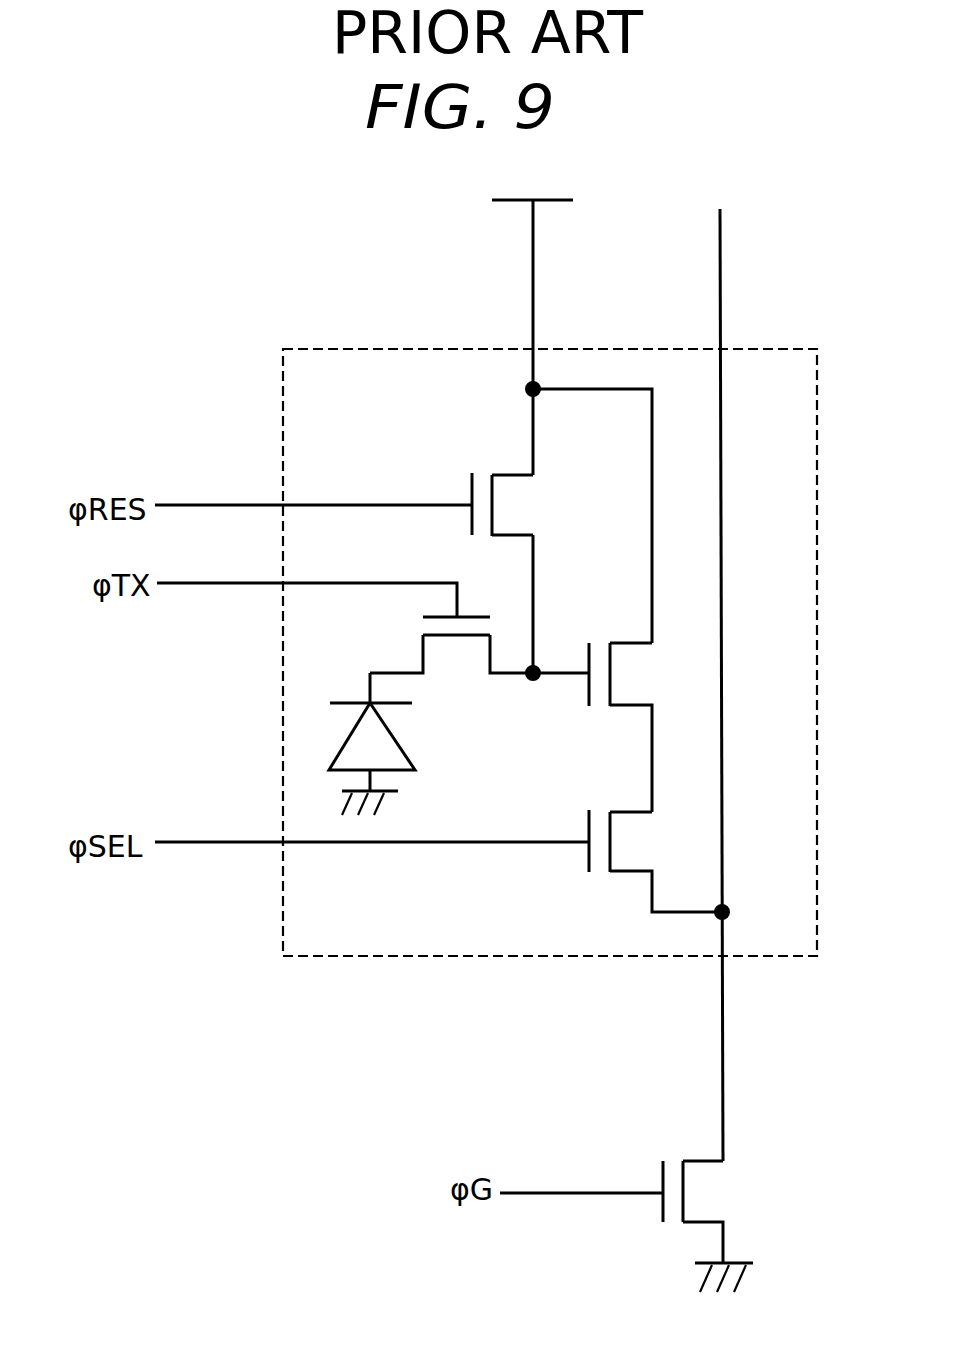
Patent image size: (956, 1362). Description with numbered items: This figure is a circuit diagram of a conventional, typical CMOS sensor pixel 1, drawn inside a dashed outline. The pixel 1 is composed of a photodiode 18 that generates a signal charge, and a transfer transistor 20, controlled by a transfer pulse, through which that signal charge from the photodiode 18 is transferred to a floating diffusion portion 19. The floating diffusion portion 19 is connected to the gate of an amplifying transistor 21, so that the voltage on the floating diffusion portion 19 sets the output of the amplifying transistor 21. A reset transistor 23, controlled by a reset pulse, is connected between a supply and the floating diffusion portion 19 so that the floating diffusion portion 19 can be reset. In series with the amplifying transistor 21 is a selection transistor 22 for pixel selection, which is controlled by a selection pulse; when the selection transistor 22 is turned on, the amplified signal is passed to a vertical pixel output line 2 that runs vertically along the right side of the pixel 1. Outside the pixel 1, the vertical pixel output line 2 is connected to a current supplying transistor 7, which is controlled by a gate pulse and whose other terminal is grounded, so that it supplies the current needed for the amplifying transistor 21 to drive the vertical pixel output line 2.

The pixel 1 is at (765, 349).
The vertical pixel output line 2 is at (725, 1035).
The current supplying transistor 7 is at (660, 1173).
The photodiode 18 is at (400, 745).
The floating diffusion portion 19 is at (535, 583).
The transfer transistor 20 is at (423, 640).
The amplifying transistor 21 is at (586, 690).
The selection transistor 22 is at (586, 854).
The reset transistor 23 is at (470, 482).